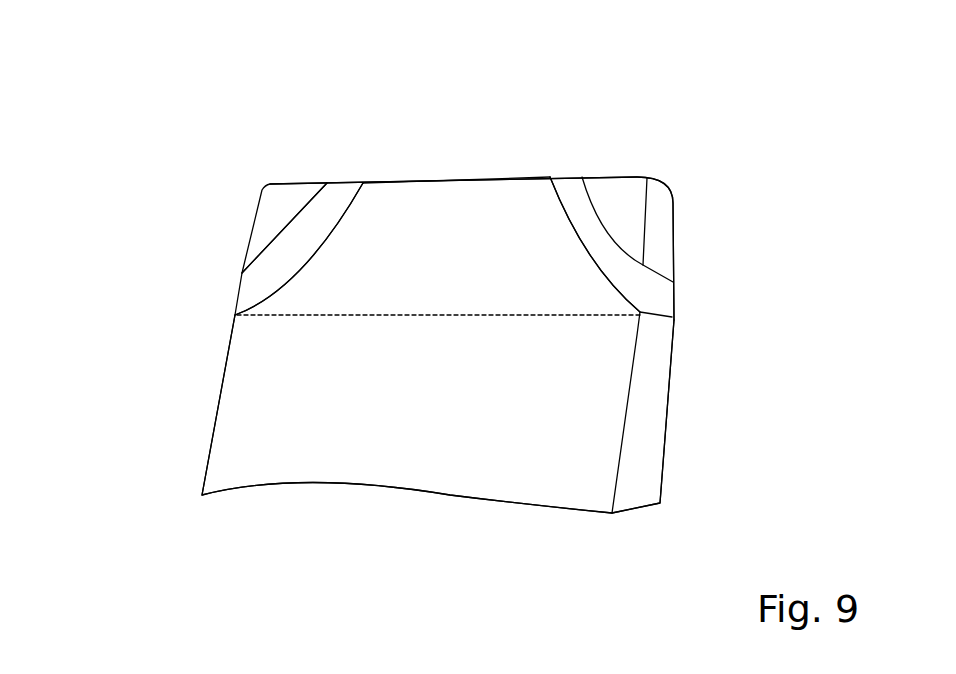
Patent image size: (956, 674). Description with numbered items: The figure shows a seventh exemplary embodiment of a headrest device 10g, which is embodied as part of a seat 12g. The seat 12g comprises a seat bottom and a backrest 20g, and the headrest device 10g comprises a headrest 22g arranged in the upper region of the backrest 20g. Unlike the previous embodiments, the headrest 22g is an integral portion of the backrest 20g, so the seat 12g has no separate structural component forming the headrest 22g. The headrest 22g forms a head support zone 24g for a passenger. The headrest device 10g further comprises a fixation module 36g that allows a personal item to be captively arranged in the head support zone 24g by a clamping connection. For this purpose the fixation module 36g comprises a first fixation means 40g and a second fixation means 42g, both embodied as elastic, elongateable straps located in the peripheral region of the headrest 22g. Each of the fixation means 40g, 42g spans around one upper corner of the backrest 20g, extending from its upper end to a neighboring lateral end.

The headrest device 10g is at (157, 265).
The seat 12g is at (405, 142).
The backrest 20g is at (408, 445).
The headrest 22g is at (496, 222).
The head support zone 24g is at (448, 238).
The fixation module 36g is at (230, 195).
The first fixation means 40g is at (572, 207).
The second fixation means 42g is at (335, 213).